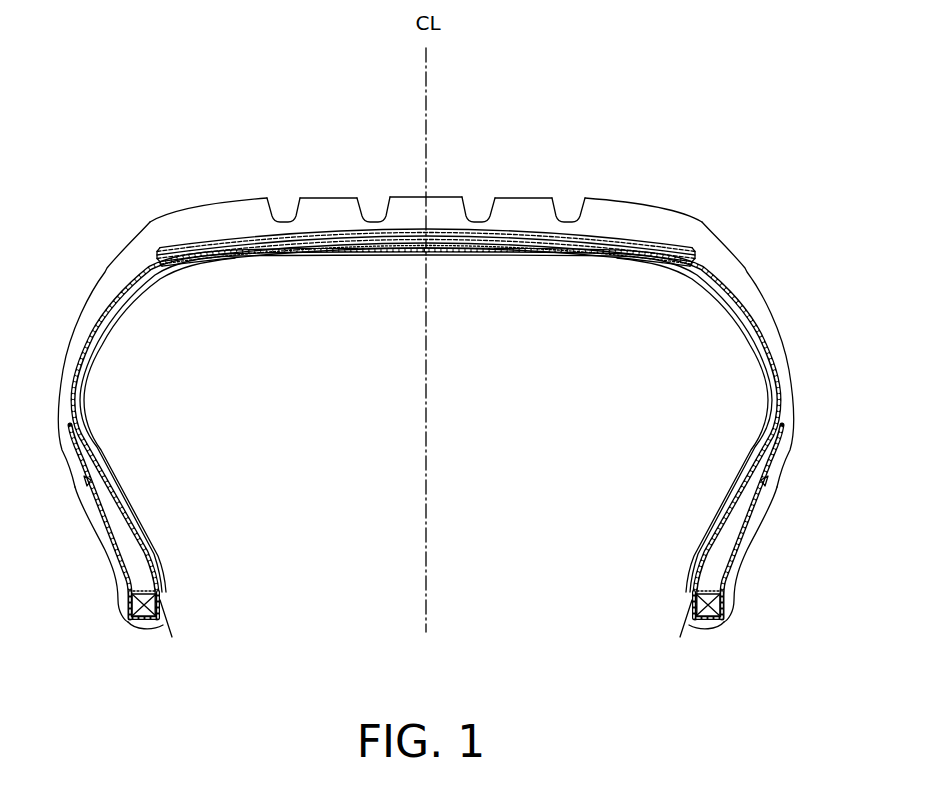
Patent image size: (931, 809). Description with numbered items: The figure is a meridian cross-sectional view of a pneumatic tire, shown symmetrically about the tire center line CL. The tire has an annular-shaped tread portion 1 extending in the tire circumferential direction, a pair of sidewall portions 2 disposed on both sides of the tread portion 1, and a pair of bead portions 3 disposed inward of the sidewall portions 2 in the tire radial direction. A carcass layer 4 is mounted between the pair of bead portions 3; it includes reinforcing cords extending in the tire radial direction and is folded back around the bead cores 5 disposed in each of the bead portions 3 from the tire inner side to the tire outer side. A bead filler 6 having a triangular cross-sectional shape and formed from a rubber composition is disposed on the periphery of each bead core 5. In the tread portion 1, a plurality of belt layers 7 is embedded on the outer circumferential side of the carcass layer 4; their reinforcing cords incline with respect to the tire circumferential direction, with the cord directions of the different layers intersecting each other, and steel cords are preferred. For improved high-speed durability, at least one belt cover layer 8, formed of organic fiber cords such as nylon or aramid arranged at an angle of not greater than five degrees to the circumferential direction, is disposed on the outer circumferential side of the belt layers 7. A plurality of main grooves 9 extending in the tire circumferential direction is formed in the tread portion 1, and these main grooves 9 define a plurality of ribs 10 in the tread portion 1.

The tread portion 1 is at (441, 184).
The sidewall portions 2 is at (787, 360).
The bead portions 3 is at (736, 603).
The carcass layer 4 is at (737, 310).
The bead cores 5 is at (160, 600).
The bead filler 6 is at (137, 572).
The belt layers 7 is at (573, 254).
The belt cover layer 8 is at (207, 236).
The main grooves 9 is at (284, 212).
The ribs 10 is at (248, 205).